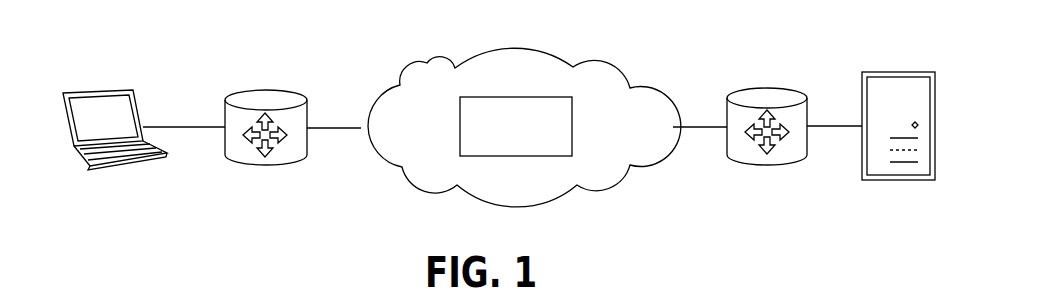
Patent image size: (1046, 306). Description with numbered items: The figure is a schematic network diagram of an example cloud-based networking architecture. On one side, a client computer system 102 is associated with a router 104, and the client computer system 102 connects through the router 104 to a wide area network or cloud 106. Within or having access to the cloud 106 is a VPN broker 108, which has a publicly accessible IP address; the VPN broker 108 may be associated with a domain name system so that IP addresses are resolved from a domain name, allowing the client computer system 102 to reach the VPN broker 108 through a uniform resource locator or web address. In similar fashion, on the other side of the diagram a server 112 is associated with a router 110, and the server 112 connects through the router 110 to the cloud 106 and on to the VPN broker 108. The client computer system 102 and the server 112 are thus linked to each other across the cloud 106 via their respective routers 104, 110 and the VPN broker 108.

The client computer system 102 is at (98, 88).
The router 104 is at (262, 90).
The wide area network or cloud 106 is at (427, 63).
The VPN broker 108 is at (460, 128).
The router 110 is at (765, 88).
The server 112 is at (905, 72).